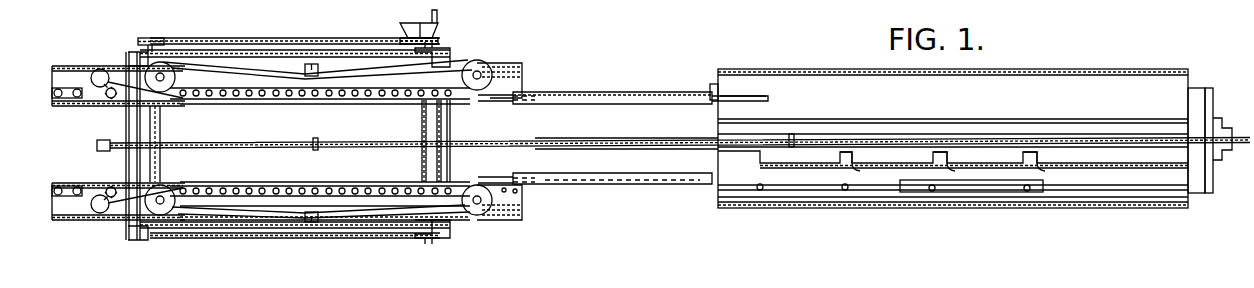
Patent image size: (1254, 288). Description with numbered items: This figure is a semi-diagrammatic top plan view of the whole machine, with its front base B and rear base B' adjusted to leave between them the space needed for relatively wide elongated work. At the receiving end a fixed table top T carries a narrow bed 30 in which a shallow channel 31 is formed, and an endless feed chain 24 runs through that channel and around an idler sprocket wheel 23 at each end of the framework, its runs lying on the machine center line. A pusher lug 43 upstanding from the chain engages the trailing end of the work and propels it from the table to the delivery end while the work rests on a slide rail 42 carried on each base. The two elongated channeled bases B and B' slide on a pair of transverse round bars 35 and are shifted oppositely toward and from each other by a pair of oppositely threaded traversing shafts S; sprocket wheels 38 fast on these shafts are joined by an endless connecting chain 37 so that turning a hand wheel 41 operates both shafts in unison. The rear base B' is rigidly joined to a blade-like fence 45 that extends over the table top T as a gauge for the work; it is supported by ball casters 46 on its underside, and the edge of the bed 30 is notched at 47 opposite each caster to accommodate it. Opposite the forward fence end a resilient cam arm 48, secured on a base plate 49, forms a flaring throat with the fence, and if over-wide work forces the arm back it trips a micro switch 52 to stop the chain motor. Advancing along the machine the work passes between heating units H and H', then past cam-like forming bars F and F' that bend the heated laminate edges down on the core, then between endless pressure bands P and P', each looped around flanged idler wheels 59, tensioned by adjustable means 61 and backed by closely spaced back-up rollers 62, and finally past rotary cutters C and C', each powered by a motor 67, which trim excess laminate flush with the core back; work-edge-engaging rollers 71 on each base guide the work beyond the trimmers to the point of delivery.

The idler sprocket wheel 23 is at (97, 146).
The endless feed chain 24 is at (611, 141).
The bed 30 is at (1112, 119).
The shallow channel 31 is at (986, 132).
The round bars 35 is at (140, 170).
The endless connecting chain 37 is at (282, 38).
The sprocket wheels 38 is at (152, 39).
The hand wheel 41 is at (419, 23).
The slide rail 42 is at (388, 104).
The pusher lug 43 is at (316, 140).
The fence 45 is at (972, 193).
The ball casters 46 is at (835, 196).
The notch 47 is at (850, 163).
The resilient cam arm 48 is at (745, 100).
The base plate 49 is at (746, 96).
The micro switch 52 is at (712, 84).
The flanged idler wheels 59 is at (166, 62).
The adjustable tensioning means 61 is at (312, 64).
The back-up rollers 62 is at (306, 100).
The motor 67 is at (101, 62).
The work-edge-engaging rollers 71 is at (57, 108).
The front base B is at (110, 72).
The rear base B' is at (114, 219).
The rotary cutter C is at (100, 106).
The rotary cutter C' is at (101, 177).
The traversing shafts S is at (156, 122).
The endless pressure band P is at (317, 96).
The endless pressure band P' is at (320, 186).
The cam-like forming bar F is at (502, 99).
The cam-like forming bar F' is at (506, 184).
The heating unit H is at (612, 85).
The heating unit H' is at (612, 194).
The table top T is at (1058, 68).